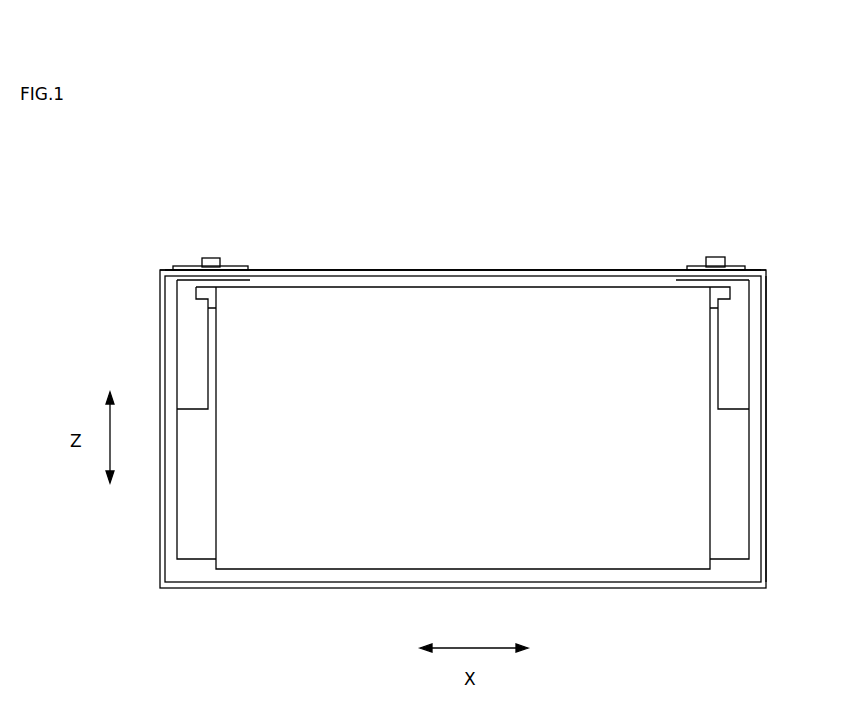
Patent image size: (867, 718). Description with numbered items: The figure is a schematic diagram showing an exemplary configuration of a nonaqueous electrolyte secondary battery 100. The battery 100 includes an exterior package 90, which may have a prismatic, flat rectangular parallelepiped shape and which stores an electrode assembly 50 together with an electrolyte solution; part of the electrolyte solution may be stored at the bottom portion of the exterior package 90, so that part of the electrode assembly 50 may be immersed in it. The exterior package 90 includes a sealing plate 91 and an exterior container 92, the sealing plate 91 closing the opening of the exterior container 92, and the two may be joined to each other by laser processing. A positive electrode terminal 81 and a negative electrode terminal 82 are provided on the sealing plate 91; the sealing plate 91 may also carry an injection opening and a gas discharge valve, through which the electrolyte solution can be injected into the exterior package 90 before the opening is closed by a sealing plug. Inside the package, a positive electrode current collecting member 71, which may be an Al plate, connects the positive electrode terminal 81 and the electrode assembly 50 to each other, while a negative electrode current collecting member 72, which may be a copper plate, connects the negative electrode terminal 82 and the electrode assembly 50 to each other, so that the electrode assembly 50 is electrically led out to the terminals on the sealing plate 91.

The battery 100 is at (192, 176).
The electrode assembly 50 is at (423, 470).
The positive electrode current collecting member 71 is at (740, 382).
The negative electrode current collecting member 72 is at (190, 392).
The positive electrode terminal 81 is at (722, 257).
The negative electrode terminal 82 is at (217, 258).
The exterior package 90 is at (831, 190).
The sealing plate 91 is at (592, 268).
The exterior container 92 is at (770, 296).